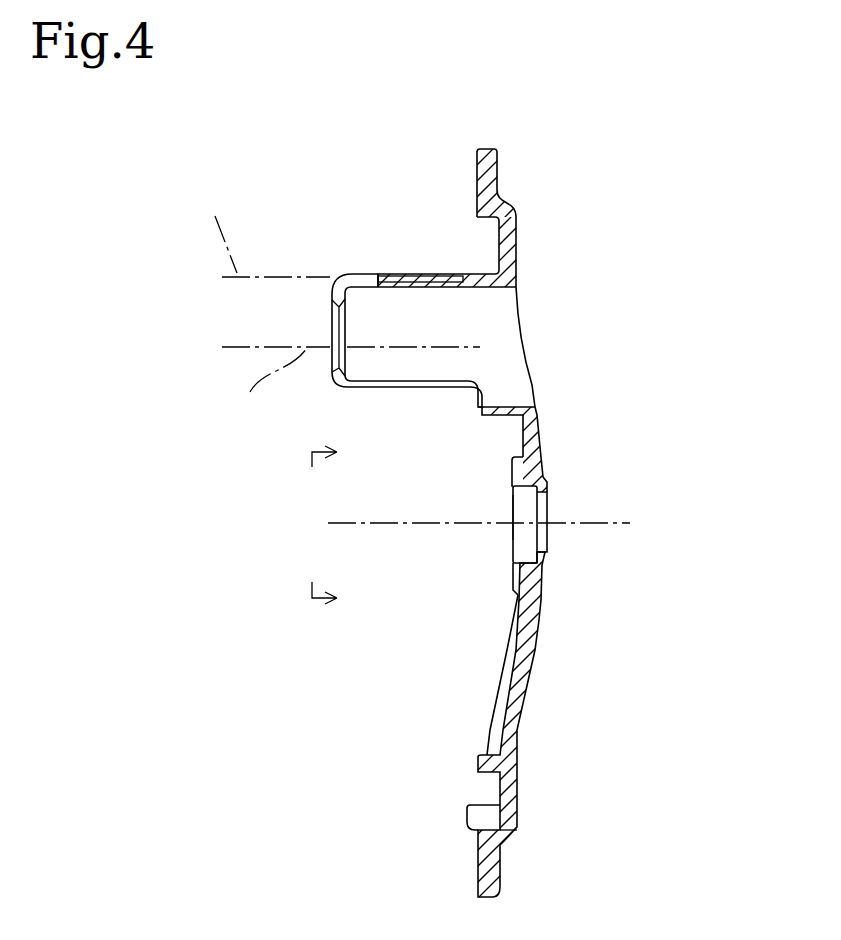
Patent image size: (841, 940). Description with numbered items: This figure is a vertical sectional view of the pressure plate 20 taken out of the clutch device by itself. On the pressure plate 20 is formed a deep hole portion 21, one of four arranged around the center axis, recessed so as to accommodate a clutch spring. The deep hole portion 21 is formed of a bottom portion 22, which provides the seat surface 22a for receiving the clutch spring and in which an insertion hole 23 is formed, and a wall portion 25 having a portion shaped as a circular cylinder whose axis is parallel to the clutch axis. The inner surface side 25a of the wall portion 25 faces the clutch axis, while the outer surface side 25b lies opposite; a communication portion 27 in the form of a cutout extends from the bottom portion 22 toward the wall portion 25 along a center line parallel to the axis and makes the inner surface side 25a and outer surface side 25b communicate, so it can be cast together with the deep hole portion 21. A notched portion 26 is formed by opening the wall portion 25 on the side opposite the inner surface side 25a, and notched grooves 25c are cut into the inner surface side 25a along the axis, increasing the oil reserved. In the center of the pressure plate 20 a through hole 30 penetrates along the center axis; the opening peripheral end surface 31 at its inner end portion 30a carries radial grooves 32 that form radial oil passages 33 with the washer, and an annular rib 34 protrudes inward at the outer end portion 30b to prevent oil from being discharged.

The pressure plate 20 is at (523, 120).
The deep hole portion 21 is at (457, 329).
The bottom portion 22 is at (333, 297).
The seat surface 22a is at (345, 302).
The insertion hole 23 is at (340, 315).
The wall portion 25 is at (455, 274).
The inner surface side 25a is at (490, 288).
The outer surface side 25b is at (507, 212).
The notched groove 25c is at (432, 287).
The notched portion 26 is at (405, 393).
The communication portion 27 is at (357, 272).
The through hole 30 is at (525, 486).
The inner end portion 30a is at (513, 563).
The outer end portion 30b is at (513, 555).
The opening peripheral end surface 31 is at (512, 469).
The radial groove 32 is at (446, 602).
The radial oil passage 33 is at (513, 587).
The annular rib 34 is at (545, 553).